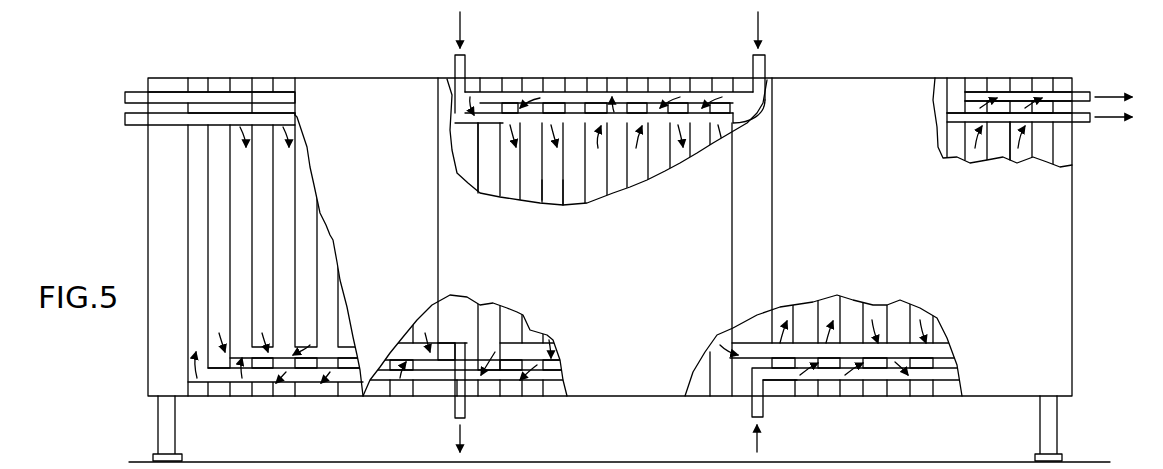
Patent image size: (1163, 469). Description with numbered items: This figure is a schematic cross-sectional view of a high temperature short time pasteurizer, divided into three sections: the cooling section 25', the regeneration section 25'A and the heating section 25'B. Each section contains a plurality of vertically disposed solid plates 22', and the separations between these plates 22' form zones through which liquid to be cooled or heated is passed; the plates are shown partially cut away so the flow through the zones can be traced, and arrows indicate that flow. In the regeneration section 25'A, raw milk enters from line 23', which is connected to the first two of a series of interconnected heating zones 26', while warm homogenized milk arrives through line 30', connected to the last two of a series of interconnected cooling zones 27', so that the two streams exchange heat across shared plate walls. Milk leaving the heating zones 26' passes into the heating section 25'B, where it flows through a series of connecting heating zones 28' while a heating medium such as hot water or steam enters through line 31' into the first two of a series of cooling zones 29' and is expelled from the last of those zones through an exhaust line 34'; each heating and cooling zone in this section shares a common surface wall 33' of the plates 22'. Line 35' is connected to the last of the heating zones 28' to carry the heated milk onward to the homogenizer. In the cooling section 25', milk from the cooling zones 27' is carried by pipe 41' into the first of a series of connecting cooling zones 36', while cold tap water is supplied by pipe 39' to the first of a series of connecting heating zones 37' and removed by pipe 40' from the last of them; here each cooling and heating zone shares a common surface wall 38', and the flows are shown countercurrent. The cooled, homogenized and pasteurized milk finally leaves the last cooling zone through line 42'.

The vertically disposed solid plates 22' is at (769, 129).
The line 23' is at (491, 75).
The cooling section 25' is at (619, 248).
The regeneration section 25'A is at (610, 67).
The heating section 25'B is at (971, 74).
The heating zones 26' is at (550, 164).
The cooling zones 27' is at (561, 220).
The heating zones 28' is at (886, 210).
The cooling zones 29' is at (836, 320).
The line 30' is at (796, 68).
The line 31' is at (794, 410).
The common surface wall 33' is at (995, 171).
The exhaust line 34' is at (1050, 68).
The line 35' is at (1041, 142).
The cooling zones 36' is at (233, 237).
The heating zones 37' is at (230, 202).
The common surface wall 38' is at (233, 360).
The pipe 39' is at (186, 126).
The pipe 40' is at (488, 397).
The pipe 41' is at (467, 358).
The line 42' is at (183, 74).